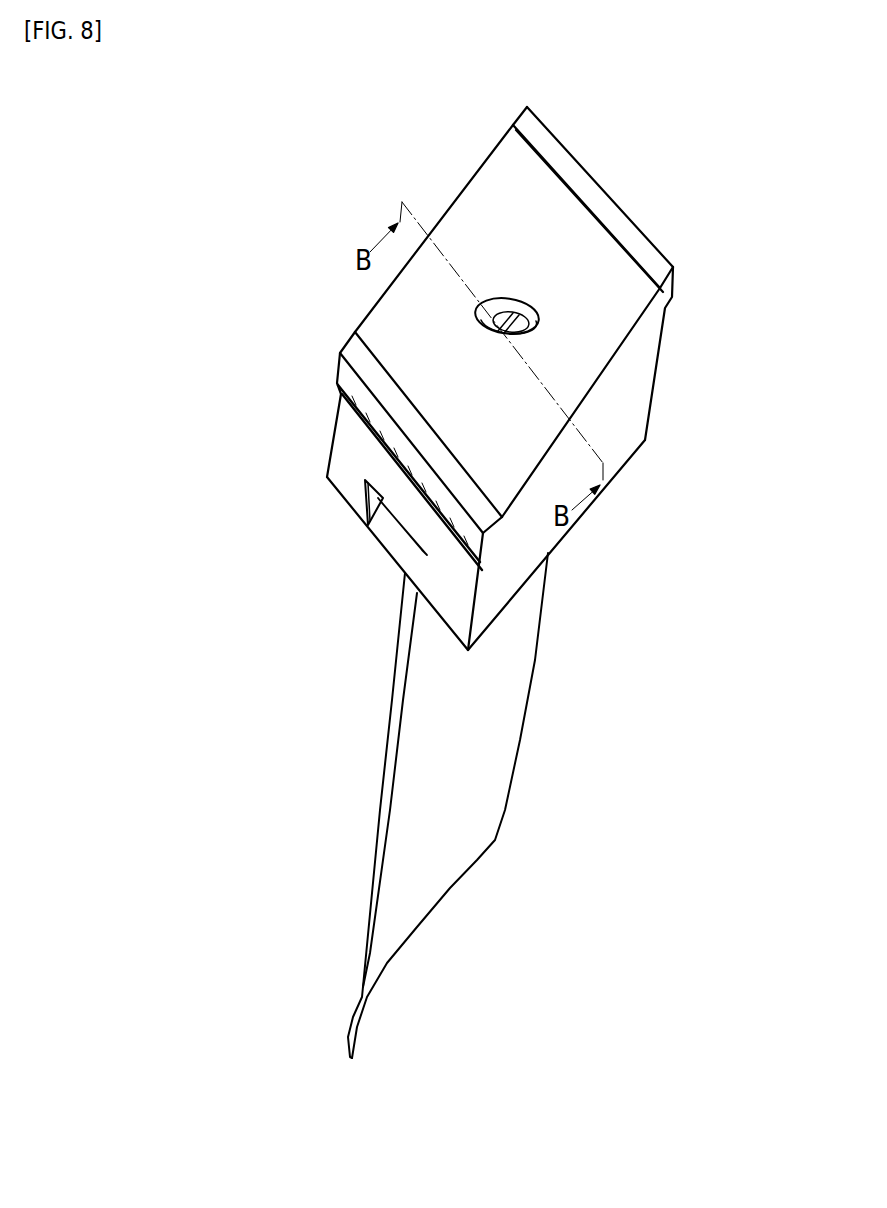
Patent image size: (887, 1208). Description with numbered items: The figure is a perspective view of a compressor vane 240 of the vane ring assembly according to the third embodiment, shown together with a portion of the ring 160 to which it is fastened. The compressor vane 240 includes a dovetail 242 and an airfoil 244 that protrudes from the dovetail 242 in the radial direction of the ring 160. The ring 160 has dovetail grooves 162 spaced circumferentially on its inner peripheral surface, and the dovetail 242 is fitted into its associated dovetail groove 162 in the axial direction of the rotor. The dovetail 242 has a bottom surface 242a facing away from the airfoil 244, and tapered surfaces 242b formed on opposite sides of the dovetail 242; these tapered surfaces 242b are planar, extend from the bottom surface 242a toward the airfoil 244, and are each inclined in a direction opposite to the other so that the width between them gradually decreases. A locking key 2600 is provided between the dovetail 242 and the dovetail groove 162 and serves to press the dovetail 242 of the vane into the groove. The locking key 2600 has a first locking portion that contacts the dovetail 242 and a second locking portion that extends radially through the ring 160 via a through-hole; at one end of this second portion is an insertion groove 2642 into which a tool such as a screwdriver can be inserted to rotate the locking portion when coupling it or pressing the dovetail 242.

The ring 160 is at (603, 293).
The dovetail groove 162 is at (420, 552).
The locking key 2600 is at (468, 310).
The insertion groove 2642 is at (540, 321).
The compressor vane 240 is at (554, 805).
The dovetail 242 is at (425, 580).
The bottom surface 242a is at (312, 430).
The tapered surface 242b is at (303, 508).
The airfoil 244 is at (480, 730).